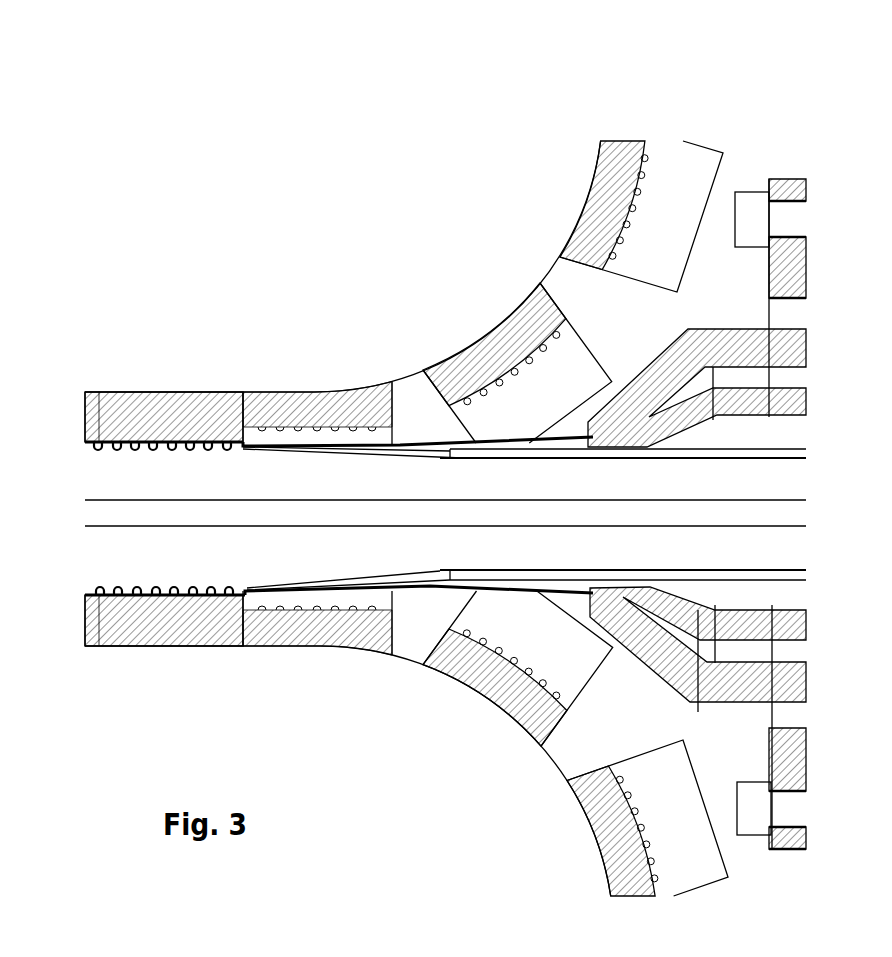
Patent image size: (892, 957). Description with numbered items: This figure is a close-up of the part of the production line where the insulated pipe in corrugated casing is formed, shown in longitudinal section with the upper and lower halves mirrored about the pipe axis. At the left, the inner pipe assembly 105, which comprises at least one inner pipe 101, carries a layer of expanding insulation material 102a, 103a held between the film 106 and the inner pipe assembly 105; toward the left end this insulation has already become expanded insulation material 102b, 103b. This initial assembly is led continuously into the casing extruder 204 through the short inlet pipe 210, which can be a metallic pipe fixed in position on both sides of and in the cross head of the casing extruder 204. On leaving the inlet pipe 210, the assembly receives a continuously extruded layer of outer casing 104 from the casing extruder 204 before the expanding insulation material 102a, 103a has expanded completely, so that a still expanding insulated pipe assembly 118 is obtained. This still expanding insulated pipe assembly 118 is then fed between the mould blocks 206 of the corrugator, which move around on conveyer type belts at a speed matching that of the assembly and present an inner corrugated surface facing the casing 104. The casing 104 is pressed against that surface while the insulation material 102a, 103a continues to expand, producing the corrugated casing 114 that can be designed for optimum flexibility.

The inner pipe 101 is at (445, 437).
The inner pipe assembly 105 is at (231, 517).
The expanding insulation material of first type 102a is at (395, 424).
The expanding insulation material of second type 103a is at (354, 480).
The expanded insulation material of first type 102b is at (136, 465).
The expanded insulation material of second type 103b is at (147, 487).
The outer casing 104 is at (575, 437).
The film 106 is at (373, 458).
The corrugated casing 114 is at (169, 440).
The still expanding insulated pipe assembly 118 is at (406, 546).
The casing extruder 204 is at (785, 145).
The mould blocks 206 is at (603, 197).
The short inlet pipe 210 is at (507, 452).